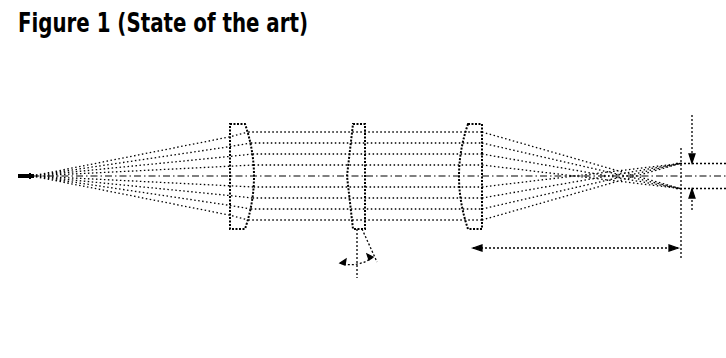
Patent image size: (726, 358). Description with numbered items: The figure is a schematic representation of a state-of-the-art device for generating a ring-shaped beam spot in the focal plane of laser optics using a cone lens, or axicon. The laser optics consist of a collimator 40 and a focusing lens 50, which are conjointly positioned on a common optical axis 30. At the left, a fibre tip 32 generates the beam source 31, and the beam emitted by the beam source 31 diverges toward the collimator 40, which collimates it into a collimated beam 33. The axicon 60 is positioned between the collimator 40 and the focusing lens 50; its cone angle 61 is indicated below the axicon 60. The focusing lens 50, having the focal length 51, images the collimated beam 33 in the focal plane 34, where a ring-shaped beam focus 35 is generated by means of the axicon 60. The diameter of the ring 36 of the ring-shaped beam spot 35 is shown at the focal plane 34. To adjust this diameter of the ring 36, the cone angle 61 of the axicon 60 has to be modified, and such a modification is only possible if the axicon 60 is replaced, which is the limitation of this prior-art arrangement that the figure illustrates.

The optical axis 30 is at (197, 186).
The beam source 31 is at (34, 181).
The fibre tip 32 is at (23, 183).
The collimated beam 33 is at (302, 223).
The focal plane 34 is at (680, 263).
The ring-shaped beam focus 35 is at (662, 190).
The diameter of the ring 36 is at (707, 188).
The collimator 40 is at (233, 230).
The focusing lens 50 is at (469, 229).
The focal length 51 is at (575, 250).
The axicon 60 is at (362, 232).
The cone angle 61 is at (350, 270).